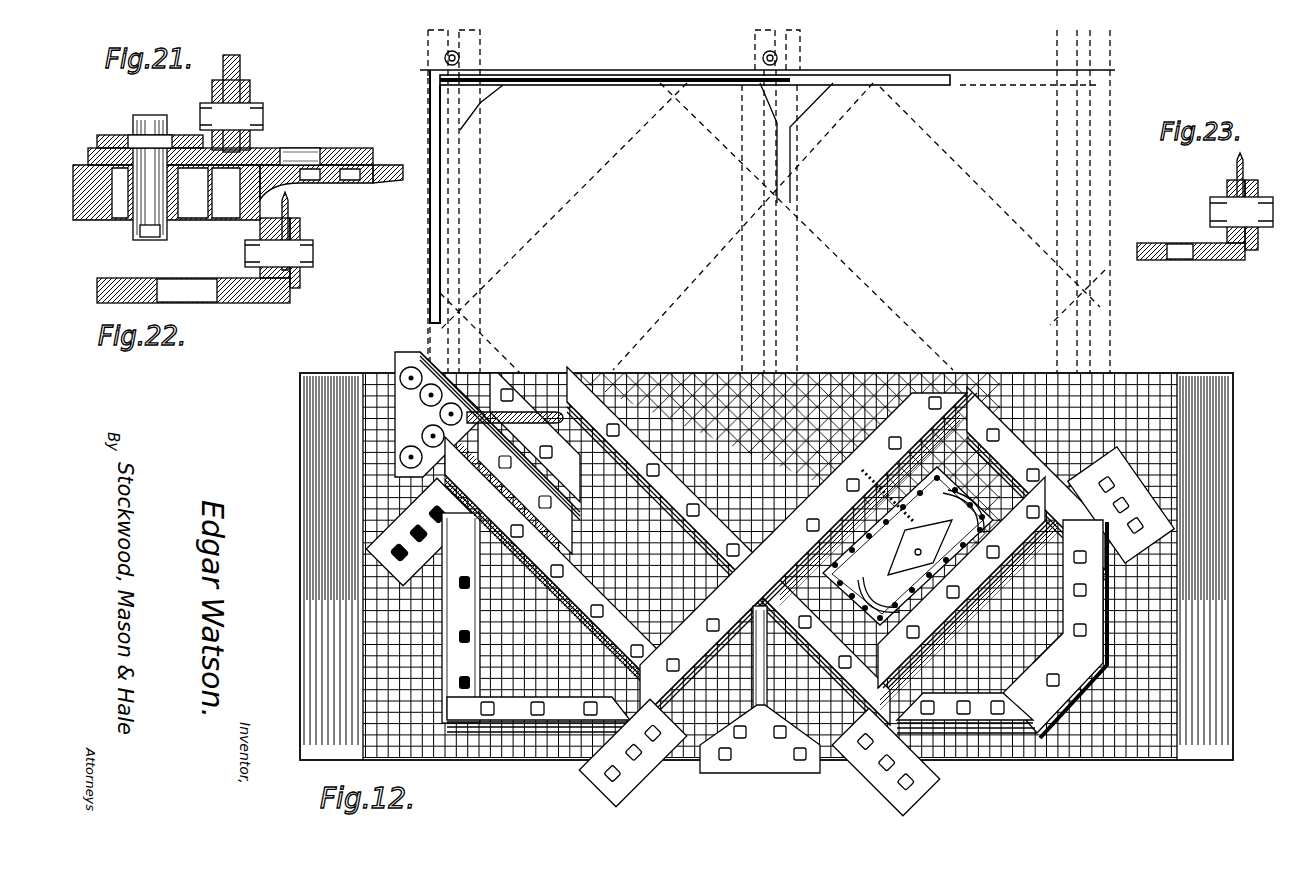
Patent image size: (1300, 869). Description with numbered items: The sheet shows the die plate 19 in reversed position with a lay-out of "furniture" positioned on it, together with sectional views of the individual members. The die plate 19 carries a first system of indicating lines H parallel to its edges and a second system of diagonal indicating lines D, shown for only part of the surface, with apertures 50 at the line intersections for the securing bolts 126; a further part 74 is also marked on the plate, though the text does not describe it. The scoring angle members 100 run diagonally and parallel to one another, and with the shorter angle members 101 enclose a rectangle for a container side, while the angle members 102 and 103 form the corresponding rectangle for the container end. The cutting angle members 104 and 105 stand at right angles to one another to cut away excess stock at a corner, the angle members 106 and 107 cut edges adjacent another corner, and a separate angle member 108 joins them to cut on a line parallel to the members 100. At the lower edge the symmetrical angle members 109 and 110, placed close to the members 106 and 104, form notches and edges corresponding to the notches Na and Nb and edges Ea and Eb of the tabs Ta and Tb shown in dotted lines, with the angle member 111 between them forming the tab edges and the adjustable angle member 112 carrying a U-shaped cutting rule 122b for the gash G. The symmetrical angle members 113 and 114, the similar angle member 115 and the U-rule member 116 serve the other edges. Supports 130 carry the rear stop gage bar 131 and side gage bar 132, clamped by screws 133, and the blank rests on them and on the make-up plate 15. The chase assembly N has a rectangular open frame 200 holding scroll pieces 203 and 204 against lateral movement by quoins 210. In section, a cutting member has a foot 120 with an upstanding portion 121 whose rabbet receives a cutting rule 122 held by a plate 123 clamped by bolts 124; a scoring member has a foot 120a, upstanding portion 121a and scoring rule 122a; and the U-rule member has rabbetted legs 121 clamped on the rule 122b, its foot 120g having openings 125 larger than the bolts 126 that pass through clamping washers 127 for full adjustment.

In FIG. 12, the make-up plate 15 is at (312, 470).
In FIG. 21, the die plate 19 is at (93, 216).
In FIG. 12, the die plate 19 is at (690, 372).
In FIG. 21, the apertures 50 is at (117, 216).
In FIG. 12, the guide 74 is at (788, 372).
In FIG. 12, the angle members 100 is at (849, 556).
In FIG. 12, the angle members 101 is at (954, 515).
In FIG. 12, the angle members 102 is at (667, 551).
In FIG. 12, the angle members 103 is at (576, 529).
In FIG. 12, the angle member 104 is at (540, 714).
In FIG. 12, the angle member 105 is at (461, 618).
In FIG. 12, the angle member 106 is at (967, 713).
In FIG. 12, the angle member 107 is at (1055, 629).
In FIG. 12, the angle member 108 is at (1045, 728).
In FIG. 12, the symmetrical angle member 109 is at (877, 782).
In FIG. 12, the symmetrical angle member 110 is at (603, 775).
In FIG. 12, the angle member 111 is at (795, 768).
In FIG. 12, the adjustable angle member 112 is at (758, 708).
In FIG. 12, the symmetrical angle member 113 is at (375, 538).
In FIG. 12, the symmetrical angle member 114 is at (1121, 505).
In FIG. 12, the angle member 115 is at (440, 414).
In FIG. 12, the U-rule member 116 is at (520, 410).
In FIG. 22, the foot or bottom 120 is at (240, 300).
In FIG. 23, the foot or bottom 120a is at (1230, 262).
In FIG. 21, the bracket 120g is at (97, 150).
In FIG. 21, the upstanding portion 121 is at (213, 92).
In FIG. 22, the upstanding portion 121 is at (300, 285).
In FIG. 21, the upstanding portion 121a is at (250, 135).
In FIG. 23, the upstanding portion 121a is at (1228, 230).
In FIG. 22, the cutting rule 122 is at (290, 213).
In FIG. 23, the scoring rule 122a is at (1237, 163).
In FIG. 21, the U-shaped cutting rule 122b is at (243, 62).
In FIG. 22, the plate 123 is at (300, 232).
In FIG. 23, the plate 123 is at (1254, 185).
In FIG. 21, the bolts 124 is at (205, 118).
In FIG. 22, the bolts 124 is at (313, 252).
In FIG. 23, the bolts 124 is at (1212, 210).
In FIG. 21, the openings 125 is at (325, 150).
In FIG. 22, the openings 125 is at (182, 292).
In FIG. 21, the bolts 126 is at (153, 120).
In FIG. 21, the clamping washers 127 is at (128, 147).
In FIG. 12, the supports 130 is at (490, 212).
In FIG. 12, the rear stop gage bar 131 is at (603, 86).
In FIG. 12, the side gage bar 132 is at (437, 172).
In FIG. 12, the screws 133 is at (470, 58).
In FIG. 12, the rectangular open frame 200 is at (946, 570).
In FIG. 12, the scroll piece 203 is at (795, 541).
In FIG. 12, the scroll piece 204 is at (965, 522).
In FIG. 12, the quoins 210 is at (905, 505).
In FIG. 12, the chase assembly N is at (979, 390).
In FIG. 12, the diagonal indicating lines D is at (868, 372).
In FIG. 12, the gash G is at (790, 188).
In FIG. 12, the indicating lines H is at (1136, 380).
In FIG. 12, the notch Nb is at (680, 85).
In FIG. 12, the edge Eb is at (716, 85).
In FIG. 12, the edge Ea is at (850, 85).
In FIG. 12, the notch Na is at (894, 85).
In FIG. 12, the tab Tb is at (732, 128).
In FIG. 12, the tab Ta is at (832, 135).